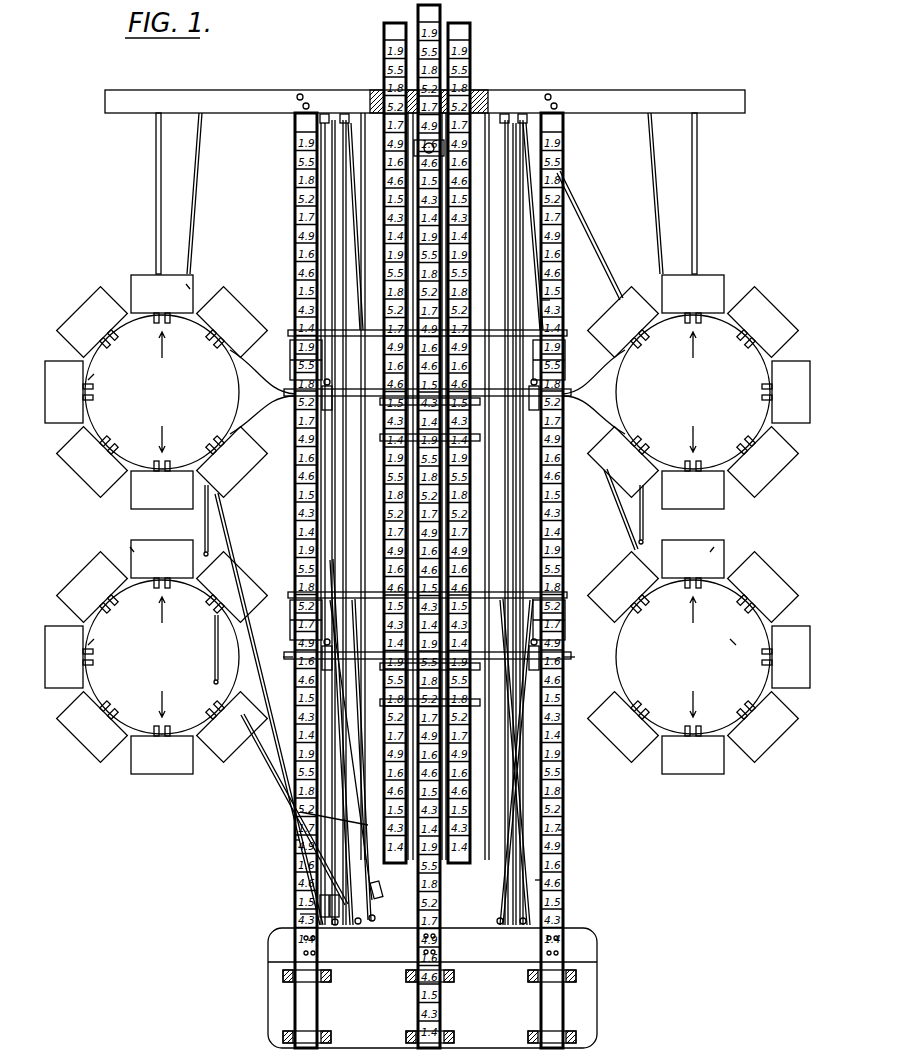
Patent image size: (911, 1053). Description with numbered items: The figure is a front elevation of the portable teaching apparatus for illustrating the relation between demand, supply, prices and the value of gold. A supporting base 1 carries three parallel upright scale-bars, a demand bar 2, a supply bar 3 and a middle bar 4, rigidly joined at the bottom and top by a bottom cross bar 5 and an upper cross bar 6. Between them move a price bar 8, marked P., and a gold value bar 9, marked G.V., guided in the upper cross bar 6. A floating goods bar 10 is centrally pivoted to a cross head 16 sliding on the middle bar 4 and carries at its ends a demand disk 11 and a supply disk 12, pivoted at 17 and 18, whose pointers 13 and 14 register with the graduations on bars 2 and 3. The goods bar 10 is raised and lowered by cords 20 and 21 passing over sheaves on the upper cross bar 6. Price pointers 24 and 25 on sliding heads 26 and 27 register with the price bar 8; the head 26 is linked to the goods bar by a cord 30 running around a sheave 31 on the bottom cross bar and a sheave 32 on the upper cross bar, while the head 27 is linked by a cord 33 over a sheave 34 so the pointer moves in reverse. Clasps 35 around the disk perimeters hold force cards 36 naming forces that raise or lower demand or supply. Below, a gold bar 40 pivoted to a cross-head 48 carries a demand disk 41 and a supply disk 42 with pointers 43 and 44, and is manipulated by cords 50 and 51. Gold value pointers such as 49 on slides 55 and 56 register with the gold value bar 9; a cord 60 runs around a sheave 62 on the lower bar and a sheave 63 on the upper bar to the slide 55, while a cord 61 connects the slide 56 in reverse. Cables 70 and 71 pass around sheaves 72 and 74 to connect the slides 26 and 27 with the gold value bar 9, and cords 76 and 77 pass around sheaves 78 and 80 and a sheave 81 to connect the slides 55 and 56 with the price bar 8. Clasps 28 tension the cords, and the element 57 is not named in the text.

The supporting base 1 is at (585, 995).
The demand scale-bar 2 is at (294, 840).
The supply scale-bar 3 is at (563, 830).
The middle bar 4 is at (442, 889).
The bottom cross bar 5 is at (585, 942).
The upper cross bar 6 is at (560, 92).
The price bar 8 is at (470, 64).
The gold value bar 9 is at (384, 84).
The goods bar 10 is at (288, 400).
The demand disk 11 is at (399, 452).
The supply disk 12 is at (675, 409).
The demand pointer 13 is at (282, 388).
The supply pointer 14 is at (565, 392).
The cross head 16 is at (382, 440).
The pivot of demand disk 17 is at (170, 393).
The pivot of supply disk 18 is at (684, 384).
The cord 20 is at (156, 206).
The cord 21 is at (697, 206).
The price pointer 24 is at (292, 292).
The price pointer 25 is at (562, 308).
The sliding head 26 is at (292, 328).
The sliding head 27 is at (584, 317).
The clasp 28 is at (331, 410).
The cord 30 is at (332, 186).
The sheave 31 is at (300, 914).
The sheave 32 is at (295, 137).
The cord 33 is at (600, 262).
The sheave 34 is at (563, 137).
The clasp 35 is at (96, 373).
The force card 36 is at (188, 285).
The gold bar 40 is at (292, 662).
The demand disk 41 is at (196, 722).
The supply disk 42 is at (699, 657).
The pointer 43 is at (288, 650).
The pointer 44 is at (565, 650).
The cross-head 48 is at (470, 705).
The gold value pointer 49 is at (370, 594).
The cord 50 is at (194, 210).
The cord 51 is at (656, 205).
The slide 55 is at (296, 598).
The slide 56 is at (566, 592).
The cord 57 is at (502, 585).
The cord 60 is at (326, 566).
The cord 61 is at (580, 526).
The sheave 62 is at (376, 906).
The sheave 63 is at (344, 116).
The cable 70 is at (302, 812).
The cable 71 is at (520, 770).
The sheave 72 is at (362, 928).
The sheave 74 is at (496, 928).
The cord 76 is at (364, 740).
The cord 77 is at (540, 882).
The sheave 78 is at (339, 928).
The sheave 80 is at (522, 928).
The sheave 81 is at (461, 85).